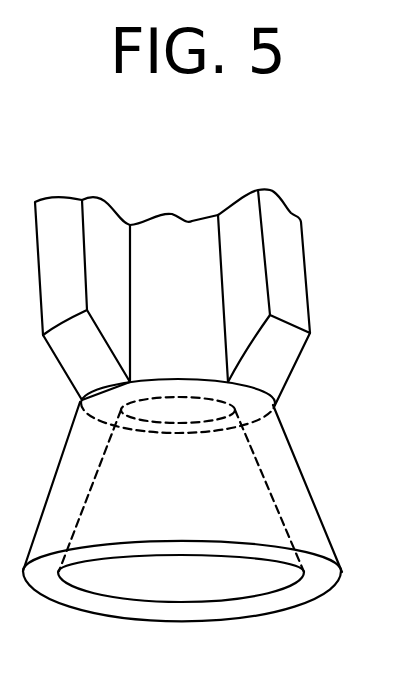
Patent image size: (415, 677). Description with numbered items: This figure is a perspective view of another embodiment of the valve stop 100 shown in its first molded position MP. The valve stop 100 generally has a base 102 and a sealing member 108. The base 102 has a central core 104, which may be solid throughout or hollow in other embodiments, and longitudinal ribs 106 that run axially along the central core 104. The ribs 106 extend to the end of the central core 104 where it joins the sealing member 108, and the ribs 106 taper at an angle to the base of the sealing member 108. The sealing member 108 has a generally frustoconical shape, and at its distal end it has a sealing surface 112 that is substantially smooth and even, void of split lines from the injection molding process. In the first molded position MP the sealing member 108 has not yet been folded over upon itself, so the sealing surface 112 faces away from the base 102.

The valve stop 100 is at (206, 365).
The base 102 is at (150, 220).
The central core 104 is at (188, 242).
The longitudinal ribs 106 is at (290, 260).
The first molded position MP is at (298, 410).
The sealing member 108 is at (206, 523).
The sealing surface 112 is at (262, 603).